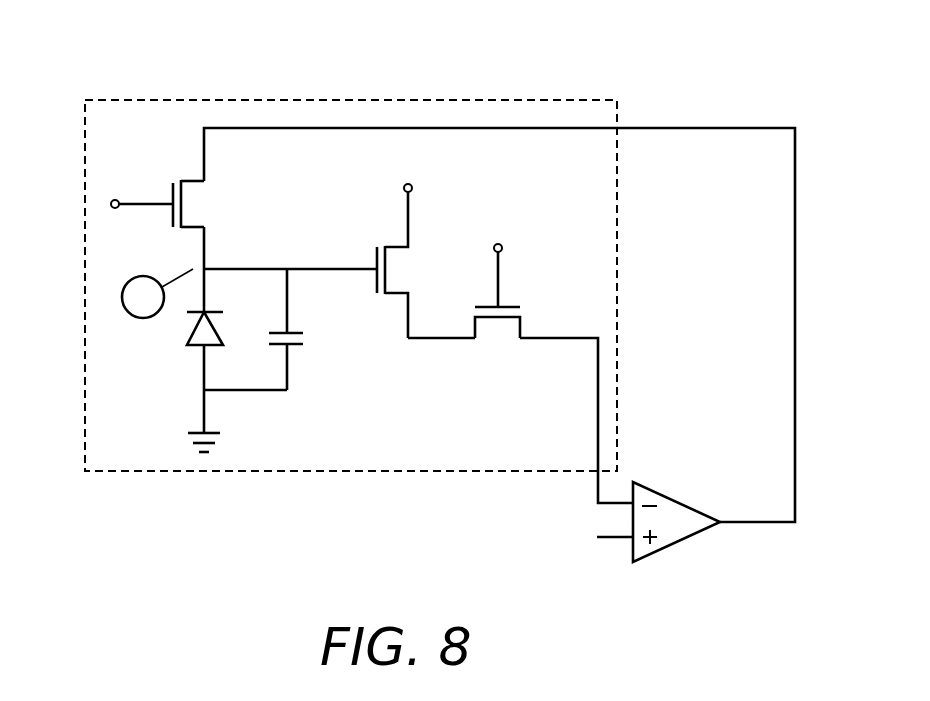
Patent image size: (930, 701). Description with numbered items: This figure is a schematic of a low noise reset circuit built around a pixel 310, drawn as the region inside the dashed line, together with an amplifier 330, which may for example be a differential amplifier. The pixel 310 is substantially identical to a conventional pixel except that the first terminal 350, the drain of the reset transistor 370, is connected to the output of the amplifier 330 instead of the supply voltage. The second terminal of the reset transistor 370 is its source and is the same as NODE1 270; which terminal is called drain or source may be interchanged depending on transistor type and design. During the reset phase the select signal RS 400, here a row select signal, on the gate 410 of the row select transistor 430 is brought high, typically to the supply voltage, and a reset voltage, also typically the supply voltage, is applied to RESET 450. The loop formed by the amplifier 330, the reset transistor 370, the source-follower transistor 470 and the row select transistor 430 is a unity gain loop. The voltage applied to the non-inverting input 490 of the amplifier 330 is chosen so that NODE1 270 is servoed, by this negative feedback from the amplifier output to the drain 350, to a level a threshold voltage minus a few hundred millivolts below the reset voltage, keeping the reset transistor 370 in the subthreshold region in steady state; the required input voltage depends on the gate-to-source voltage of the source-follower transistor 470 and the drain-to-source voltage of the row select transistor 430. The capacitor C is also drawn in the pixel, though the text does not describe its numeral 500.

The pixel 310 is at (333, 98).
The first terminal 350 is at (205, 182).
The reset transistor 370 is at (261, 209).
The RESET 450 is at (113, 205).
The NODE1 270 is at (108, 313).
The integration capacitor C 500 is at (292, 332).
The source-follower transistor 470 is at (417, 263).
The select signal RS 400 is at (502, 246).
The gate 410 is at (510, 305).
The row select transistor 430 is at (500, 333).
The amplifier 330 is at (678, 542).
The non-inverting input 490 is at (613, 540).